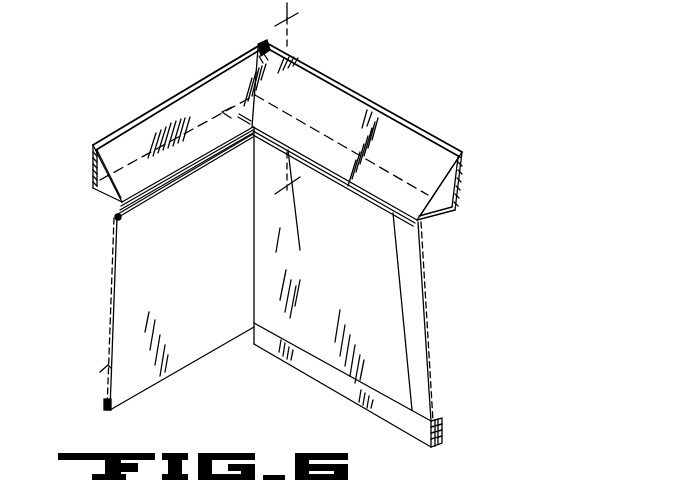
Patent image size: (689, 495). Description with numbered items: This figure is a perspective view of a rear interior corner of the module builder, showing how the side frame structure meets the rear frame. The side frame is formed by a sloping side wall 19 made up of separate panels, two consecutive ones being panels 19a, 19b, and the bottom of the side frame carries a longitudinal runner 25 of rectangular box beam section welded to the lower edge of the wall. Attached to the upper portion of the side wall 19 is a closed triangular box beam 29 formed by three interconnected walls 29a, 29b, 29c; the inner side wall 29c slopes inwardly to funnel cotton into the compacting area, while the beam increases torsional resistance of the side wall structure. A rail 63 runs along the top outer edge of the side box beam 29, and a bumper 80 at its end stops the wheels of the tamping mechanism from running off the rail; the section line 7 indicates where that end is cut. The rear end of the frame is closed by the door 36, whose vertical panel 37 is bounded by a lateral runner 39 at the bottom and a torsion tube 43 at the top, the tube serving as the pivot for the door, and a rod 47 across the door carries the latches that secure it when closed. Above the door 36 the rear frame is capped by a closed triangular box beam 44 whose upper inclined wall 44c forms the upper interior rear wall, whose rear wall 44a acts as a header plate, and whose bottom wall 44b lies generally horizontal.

The section line 7- 7 is at (296, 22).
The side wall 19 is at (414, 295).
The panel 19a is at (370, 378).
The panel 19b is at (293, 332).
The longitudinal runner 25 is at (441, 445).
The closed triangular box beam 29 is at (405, 125).
The wall of triangular box beam 29a is at (462, 173).
The bottom wall of triangular box beam 29b is at (438, 218).
The inner side wall of triangular box beam 29c is at (432, 145).
The door 36 is at (113, 313).
The vertical panel 37 is at (114, 341).
The lateral runner 39 is at (104, 407).
The torsion tube 43 is at (114, 219).
The closed triangular box beam 44 is at (151, 112).
The rear wall of box beam 44a is at (91, 172).
The bottom wall of box beam 44b is at (110, 196).
The upper inclined wall of box beam 44c is at (113, 137).
The rod 47 is at (106, 370).
The rail 63 is at (362, 97).
The bumper 80 is at (261, 47).